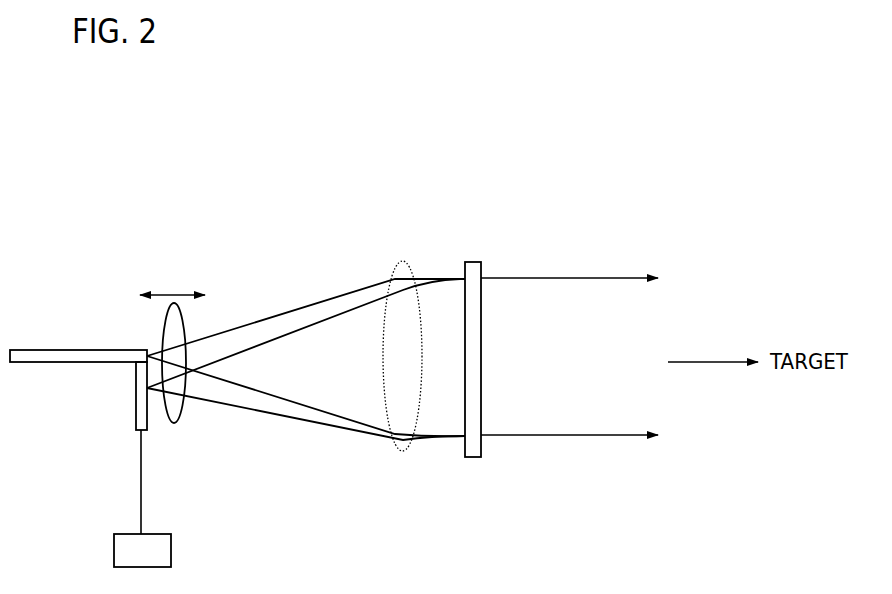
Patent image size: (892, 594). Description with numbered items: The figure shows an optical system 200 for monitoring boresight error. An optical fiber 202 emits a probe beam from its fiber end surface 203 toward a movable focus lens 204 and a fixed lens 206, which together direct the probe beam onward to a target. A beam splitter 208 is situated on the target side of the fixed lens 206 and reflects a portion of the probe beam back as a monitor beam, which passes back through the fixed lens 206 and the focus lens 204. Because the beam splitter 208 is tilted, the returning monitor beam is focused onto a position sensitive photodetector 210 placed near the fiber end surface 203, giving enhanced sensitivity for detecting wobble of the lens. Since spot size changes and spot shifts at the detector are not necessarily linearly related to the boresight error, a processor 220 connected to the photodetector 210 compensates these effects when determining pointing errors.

The optical system 200 is at (502, 168).
The optical fiber 202 is at (77, 360).
The fiber end surface 203 is at (150, 350).
The focus lens 204 is at (185, 332).
The fixed lens 206 is at (402, 261).
The beam splitter 208 is at (477, 262).
The position sensitive photodetector 210 is at (132, 422).
The processor 220 is at (162, 533).